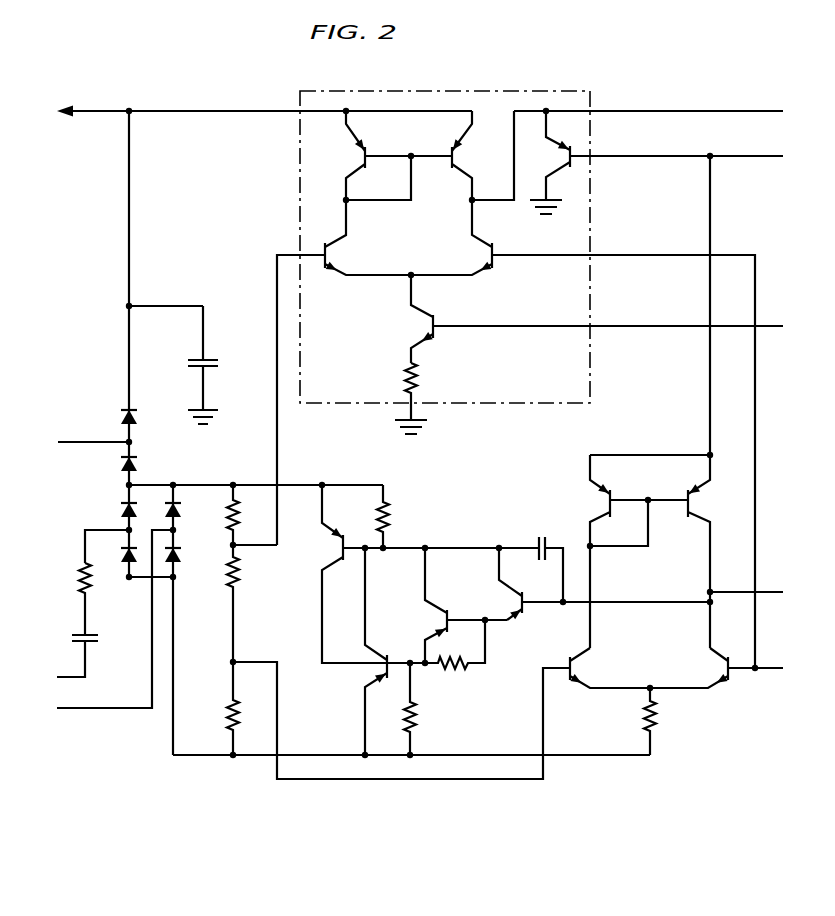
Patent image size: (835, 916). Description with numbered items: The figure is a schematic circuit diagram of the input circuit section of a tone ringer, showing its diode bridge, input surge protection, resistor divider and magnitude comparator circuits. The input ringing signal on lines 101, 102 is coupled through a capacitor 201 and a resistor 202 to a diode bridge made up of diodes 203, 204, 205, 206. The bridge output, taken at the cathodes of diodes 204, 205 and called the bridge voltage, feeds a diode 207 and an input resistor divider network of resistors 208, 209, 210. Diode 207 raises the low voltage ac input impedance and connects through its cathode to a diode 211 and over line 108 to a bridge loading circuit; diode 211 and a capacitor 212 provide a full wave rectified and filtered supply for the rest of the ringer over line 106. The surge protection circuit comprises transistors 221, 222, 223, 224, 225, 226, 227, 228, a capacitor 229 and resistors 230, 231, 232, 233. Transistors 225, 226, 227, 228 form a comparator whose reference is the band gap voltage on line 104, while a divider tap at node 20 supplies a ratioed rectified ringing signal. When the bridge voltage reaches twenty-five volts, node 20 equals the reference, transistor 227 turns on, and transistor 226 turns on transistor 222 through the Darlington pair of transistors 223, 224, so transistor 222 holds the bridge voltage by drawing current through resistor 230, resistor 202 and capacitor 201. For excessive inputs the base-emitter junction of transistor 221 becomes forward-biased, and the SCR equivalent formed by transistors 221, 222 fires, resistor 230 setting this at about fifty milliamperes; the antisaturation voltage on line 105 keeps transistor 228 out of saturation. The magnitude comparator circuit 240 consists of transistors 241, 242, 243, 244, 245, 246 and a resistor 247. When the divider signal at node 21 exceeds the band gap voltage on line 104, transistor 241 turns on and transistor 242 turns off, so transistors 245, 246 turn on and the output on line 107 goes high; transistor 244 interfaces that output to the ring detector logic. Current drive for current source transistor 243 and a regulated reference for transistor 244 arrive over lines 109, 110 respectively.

The line 101 is at (71, 659).
The line 102 is at (115, 619).
The line 104 is at (639, 463).
The line 105 is at (748, 582).
The line 106 is at (264, 99).
The line 107 is at (627, 141).
The line 108 is at (94, 428).
The line 109 is at (609, 313).
The line 110 is at (676, 293).
The node 20 is at (231, 661).
The node 21 is at (231, 546).
The capacitor 201 is at (100, 634).
The resistor 202 is at (71, 598).
The diode 203 is at (116, 550).
The diode 204 is at (112, 504).
The diode 205 is at (191, 504).
The diode 206 is at (188, 564).
The diode 207 is at (138, 465).
The resistor 208 is at (250, 515).
The resistor 209 is at (250, 603).
The resistor 210 is at (250, 710).
The diode 211 is at (138, 418).
The capacitor 212 is at (218, 365).
The transistor 221 is at (430, 574).
The transistor 222 is at (356, 653).
The transistor 223 is at (446, 607).
The transistor 224 is at (589, 584).
The transistor 225 is at (634, 550).
The transistor 226 is at (682, 551).
The transistor 227 is at (610, 668).
The transistor 228 is at (687, 669).
The capacitor 229 is at (542, 537).
The resistor 230 is at (400, 518).
The resistor 231 is at (436, 660).
The resistor 232 is at (428, 709).
The resistor 233 is at (668, 721).
The magnitude comparator circuit 240 is at (543, 90).
The transistor 241 is at (344, 372).
The transistor 242 is at (450, 239).
The current source transistor 243 is at (401, 319).
The transistor 244 is at (560, 162).
The transistor 245 is at (340, 155).
The transistor 246 is at (448, 157).
The resistor 247 is at (424, 398).